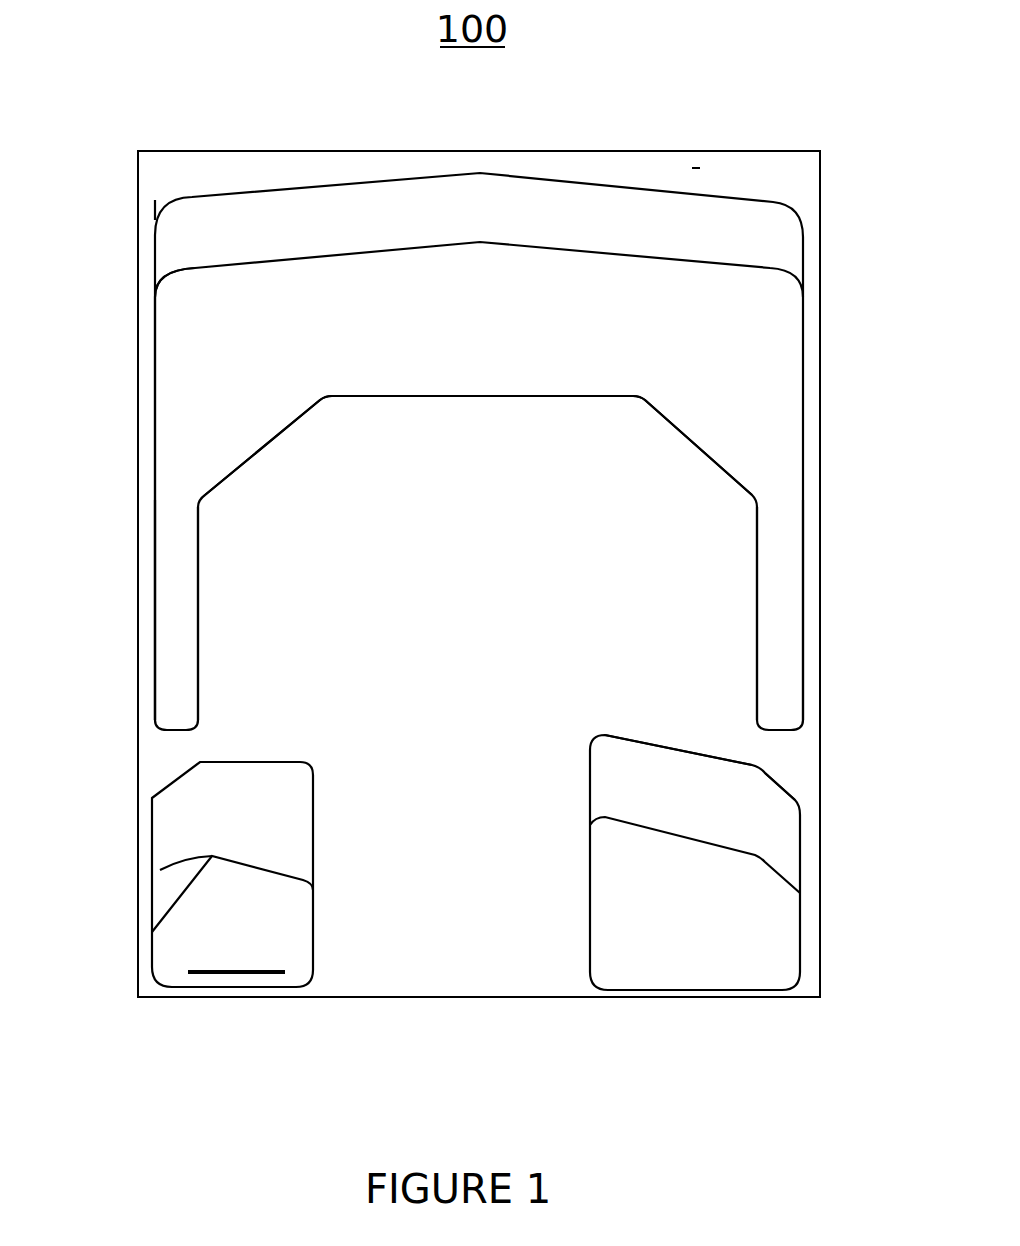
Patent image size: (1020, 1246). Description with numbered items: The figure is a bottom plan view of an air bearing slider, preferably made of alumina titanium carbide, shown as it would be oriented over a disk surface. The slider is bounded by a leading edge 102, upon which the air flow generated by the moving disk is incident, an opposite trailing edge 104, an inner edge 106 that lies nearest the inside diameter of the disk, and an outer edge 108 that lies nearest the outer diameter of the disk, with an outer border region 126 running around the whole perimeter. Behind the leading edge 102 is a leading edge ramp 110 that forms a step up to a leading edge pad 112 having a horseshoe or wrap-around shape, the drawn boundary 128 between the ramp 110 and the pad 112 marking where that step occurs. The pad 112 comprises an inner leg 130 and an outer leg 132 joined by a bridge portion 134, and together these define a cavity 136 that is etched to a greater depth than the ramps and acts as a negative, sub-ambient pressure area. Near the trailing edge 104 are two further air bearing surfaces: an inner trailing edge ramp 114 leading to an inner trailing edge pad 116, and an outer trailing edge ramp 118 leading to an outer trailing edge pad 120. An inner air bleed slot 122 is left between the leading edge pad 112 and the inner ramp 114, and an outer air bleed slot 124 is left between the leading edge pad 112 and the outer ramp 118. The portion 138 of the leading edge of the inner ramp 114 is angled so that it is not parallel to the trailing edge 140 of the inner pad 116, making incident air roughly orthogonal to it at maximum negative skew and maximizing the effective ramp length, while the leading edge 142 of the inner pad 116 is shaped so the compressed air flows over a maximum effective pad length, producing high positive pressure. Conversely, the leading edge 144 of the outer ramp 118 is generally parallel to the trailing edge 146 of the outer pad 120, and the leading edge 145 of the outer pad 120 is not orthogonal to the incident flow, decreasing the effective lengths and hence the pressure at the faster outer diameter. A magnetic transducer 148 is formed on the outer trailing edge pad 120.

The leading edge 102 is at (458, 152).
The trailing edge 104 is at (468, 999).
The inner edge 106 is at (822, 503).
The outer edge 108 is at (138, 460).
The leading edge ramp 110 is at (532, 212).
The leading edge pad 112 is at (170, 278).
The inner trailing edge ramp 114 is at (628, 778).
The inner trailing edge pad 116 is at (658, 952).
The outer trailing edge ramp 118 is at (293, 833).
The outer trailing edge pad 120 is at (293, 908).
The inner air bleed slot 122 is at (790, 750).
The outer air bleed slot 124 is at (162, 747).
The outer border region 126 is at (692, 168).
The upper band 128 is at (298, 253).
The inner leg 130 is at (777, 577).
The outer leg 132 is at (178, 558).
The bridge portion 134 is at (515, 313).
The cavity 136 is at (548, 472).
The portion of the leading edge of the inner trailing edge ramp 138 is at (783, 788).
The trailing edge of the inner trailing edge pad 140 is at (740, 993).
The leading edge of the inner trailing edge pad 142 is at (702, 837).
The leading edge of the outer trailing edge ramp 144 is at (248, 760).
The leading edge of the outer trailing edge pad 145 is at (160, 870).
The trailing edge of the outer trailing edge pad 146 is at (247, 987).
The magnetic transducer 148 is at (235, 968).